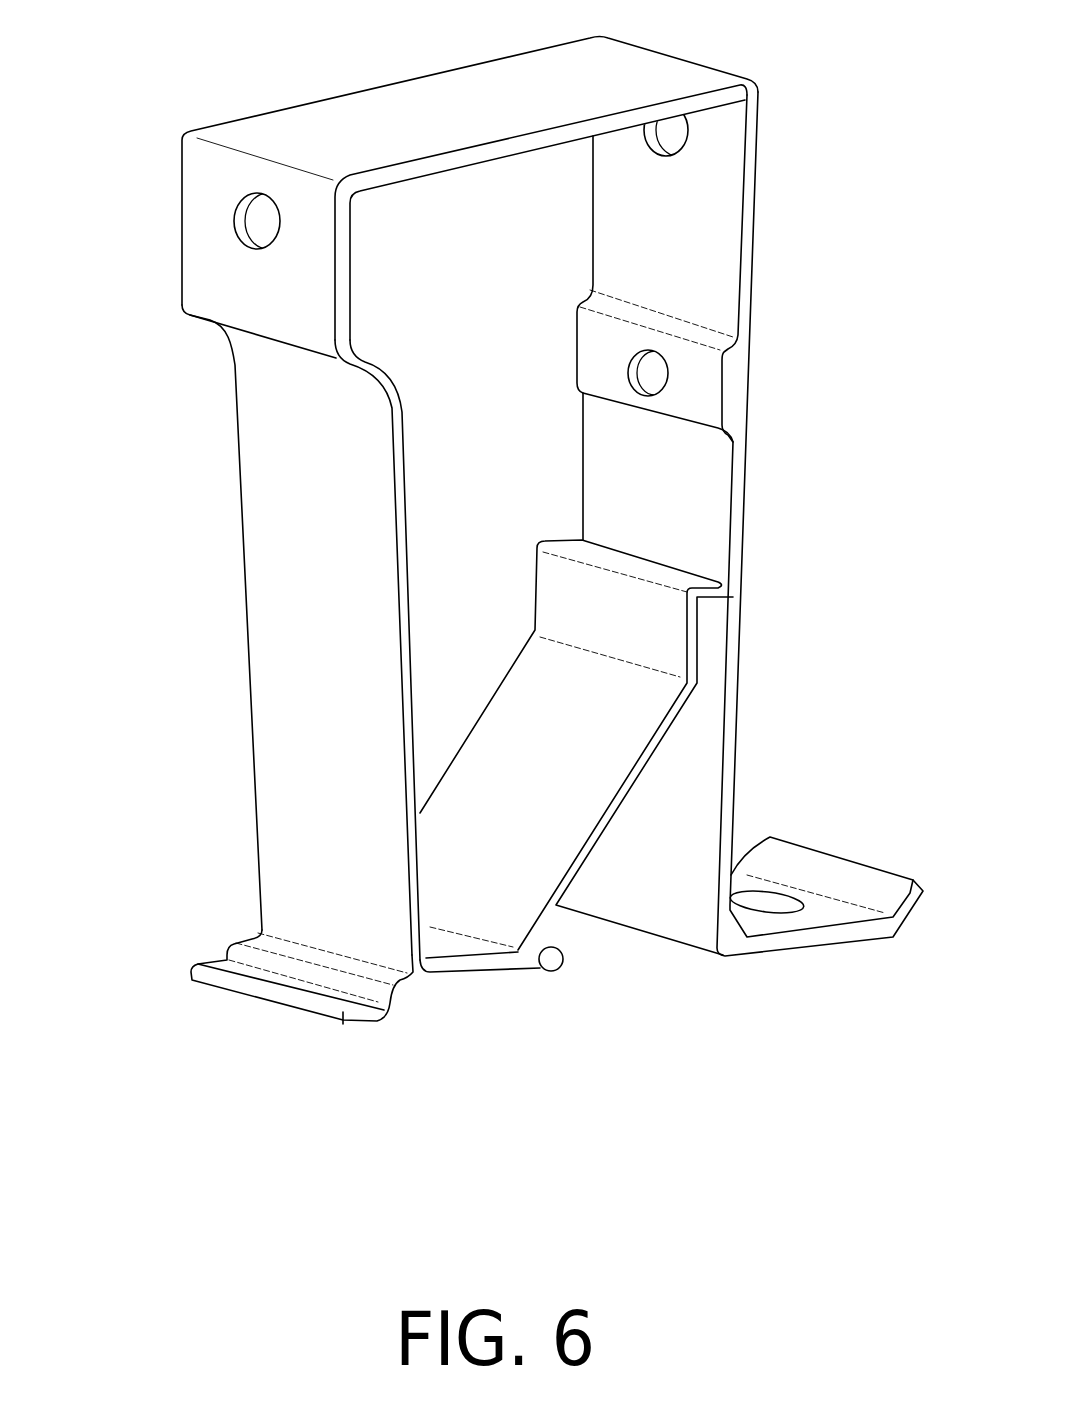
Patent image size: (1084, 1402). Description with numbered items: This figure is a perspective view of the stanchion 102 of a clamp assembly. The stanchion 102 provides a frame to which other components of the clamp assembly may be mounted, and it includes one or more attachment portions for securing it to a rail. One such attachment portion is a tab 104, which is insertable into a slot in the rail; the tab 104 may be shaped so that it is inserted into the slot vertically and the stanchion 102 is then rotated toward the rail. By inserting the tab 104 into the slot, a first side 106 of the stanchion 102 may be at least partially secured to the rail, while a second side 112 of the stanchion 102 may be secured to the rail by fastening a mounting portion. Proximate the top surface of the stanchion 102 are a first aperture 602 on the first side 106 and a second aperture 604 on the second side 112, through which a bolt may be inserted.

The stanchion 102 is at (497, 531).
The tab 104 is at (198, 965).
The first side 106 is at (221, 546).
The second side 112 is at (778, 513).
The first aperture 602 is at (235, 206).
The second aperture 604 is at (690, 128).